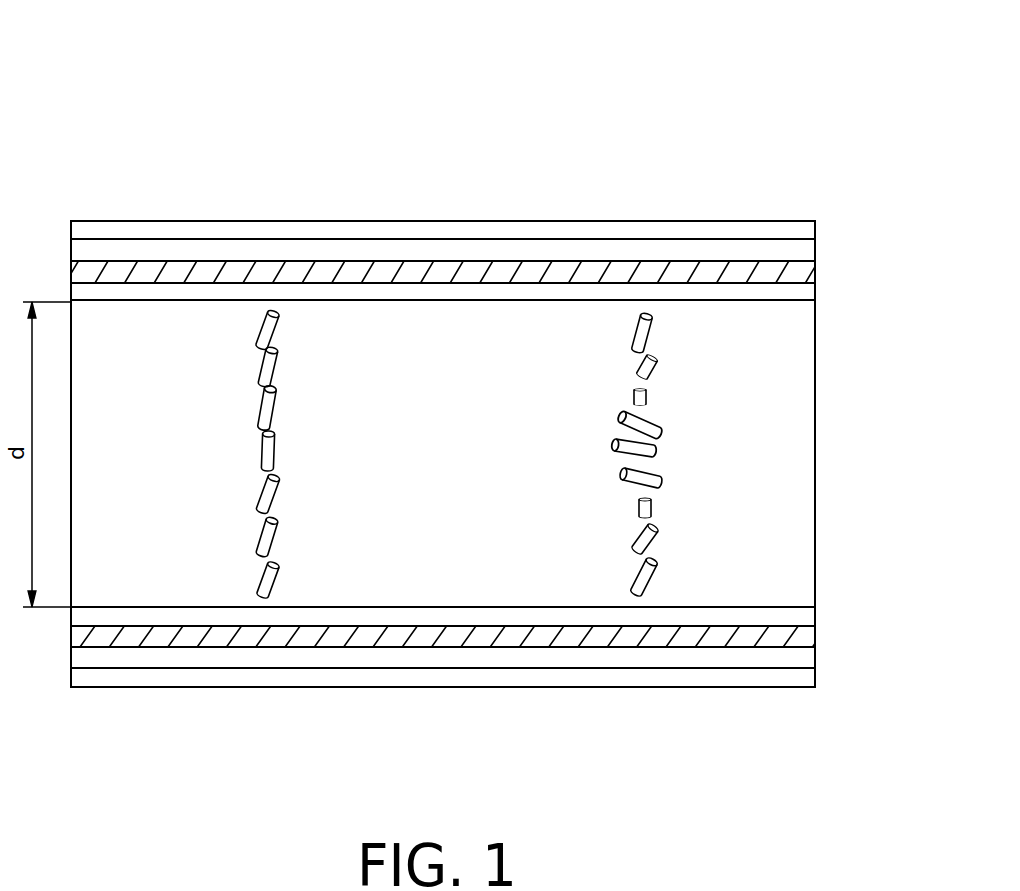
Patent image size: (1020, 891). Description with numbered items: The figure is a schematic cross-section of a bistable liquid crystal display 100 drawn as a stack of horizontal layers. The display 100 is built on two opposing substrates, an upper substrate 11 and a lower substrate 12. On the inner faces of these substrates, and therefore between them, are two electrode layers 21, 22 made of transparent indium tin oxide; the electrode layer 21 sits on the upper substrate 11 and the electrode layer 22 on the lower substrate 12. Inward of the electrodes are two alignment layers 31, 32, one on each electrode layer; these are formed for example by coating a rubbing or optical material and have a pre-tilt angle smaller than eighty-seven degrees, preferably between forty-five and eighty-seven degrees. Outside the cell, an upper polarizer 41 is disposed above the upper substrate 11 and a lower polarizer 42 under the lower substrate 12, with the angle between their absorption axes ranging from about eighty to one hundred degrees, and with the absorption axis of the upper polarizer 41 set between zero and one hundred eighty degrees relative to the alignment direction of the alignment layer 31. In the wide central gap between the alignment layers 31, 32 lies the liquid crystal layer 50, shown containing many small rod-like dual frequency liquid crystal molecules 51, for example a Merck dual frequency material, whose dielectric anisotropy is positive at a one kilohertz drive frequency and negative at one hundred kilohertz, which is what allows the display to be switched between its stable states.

The bistable liquid crystal display 100 is at (128, 82).
The upper polarizer 41 is at (808, 230).
The upper substrate 11 is at (808, 250).
The electrode layer 21 is at (798, 275).
The alignment layer 31 is at (803, 293).
The liquid crystal layer 50 is at (795, 450).
The dual frequency liquid crystal molecules 51 is at (280, 323).
The alignment layer 32 is at (808, 617).
The electrode layer 22 is at (808, 636).
The lower substrate 12 is at (800, 660).
The lower polarizer 42 is at (803, 676).